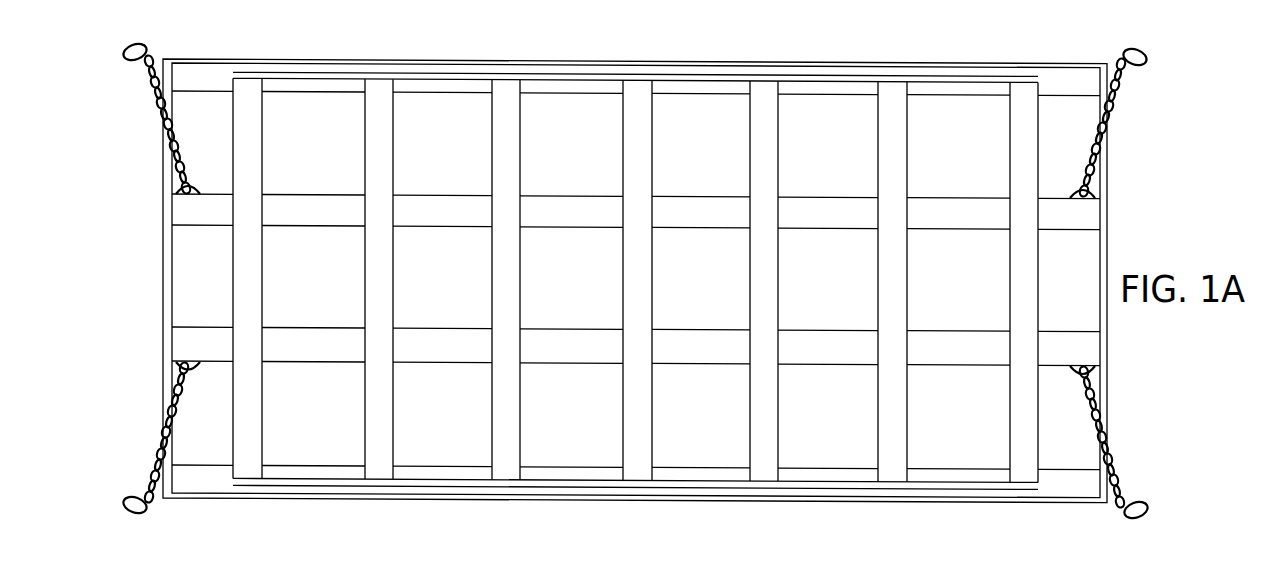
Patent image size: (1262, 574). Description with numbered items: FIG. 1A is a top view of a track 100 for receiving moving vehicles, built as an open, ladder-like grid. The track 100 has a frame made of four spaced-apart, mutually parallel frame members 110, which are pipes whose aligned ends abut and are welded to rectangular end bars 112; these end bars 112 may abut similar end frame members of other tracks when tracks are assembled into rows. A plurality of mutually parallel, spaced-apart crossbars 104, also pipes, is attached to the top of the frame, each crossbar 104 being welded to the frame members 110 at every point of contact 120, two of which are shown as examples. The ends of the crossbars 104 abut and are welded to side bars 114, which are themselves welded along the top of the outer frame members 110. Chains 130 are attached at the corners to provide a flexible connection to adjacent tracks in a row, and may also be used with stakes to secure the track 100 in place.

The track 100 is at (1190, 128).
The crossbars 104 is at (502, 273).
The frame members 110 is at (700, 182).
The end bars 112 is at (167, 280).
The side bars 114 is at (482, 77).
The point of contact 120 is at (905, 198).
The chains 130 is at (1117, 93).